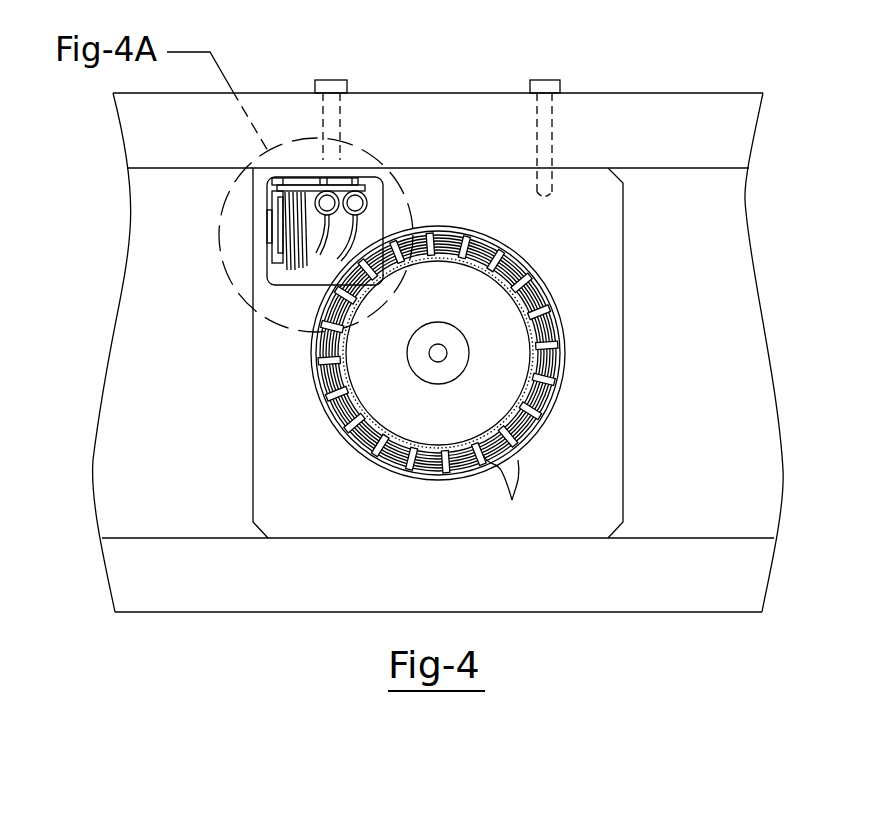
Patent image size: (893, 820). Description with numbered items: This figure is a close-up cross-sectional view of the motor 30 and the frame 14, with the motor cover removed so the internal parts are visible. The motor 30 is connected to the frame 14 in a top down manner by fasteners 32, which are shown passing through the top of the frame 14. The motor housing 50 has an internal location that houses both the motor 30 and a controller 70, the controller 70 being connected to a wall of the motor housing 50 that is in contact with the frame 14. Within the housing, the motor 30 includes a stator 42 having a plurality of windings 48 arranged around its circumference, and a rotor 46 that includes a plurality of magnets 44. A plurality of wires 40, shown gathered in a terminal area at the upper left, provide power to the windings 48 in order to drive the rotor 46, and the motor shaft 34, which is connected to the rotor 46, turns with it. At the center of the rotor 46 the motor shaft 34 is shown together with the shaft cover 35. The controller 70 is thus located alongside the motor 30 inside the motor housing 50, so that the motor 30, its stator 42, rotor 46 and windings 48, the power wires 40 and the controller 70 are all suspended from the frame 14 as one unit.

The frame 14 is at (650, 93).
The motor 30 is at (556, 268).
The fastener 32 is at (335, 86).
The motor shaft 34 is at (459, 308).
The shaft cover 35 is at (443, 358).
The wires 40 is at (368, 222).
The motor stator 42 is at (557, 438).
The magnets 44 is at (360, 268).
The motor rotor 46 is at (383, 389).
The motor windings 48 is at (505, 492).
The motor housing 50 is at (281, 483).
The controller 70 is at (249, 263).